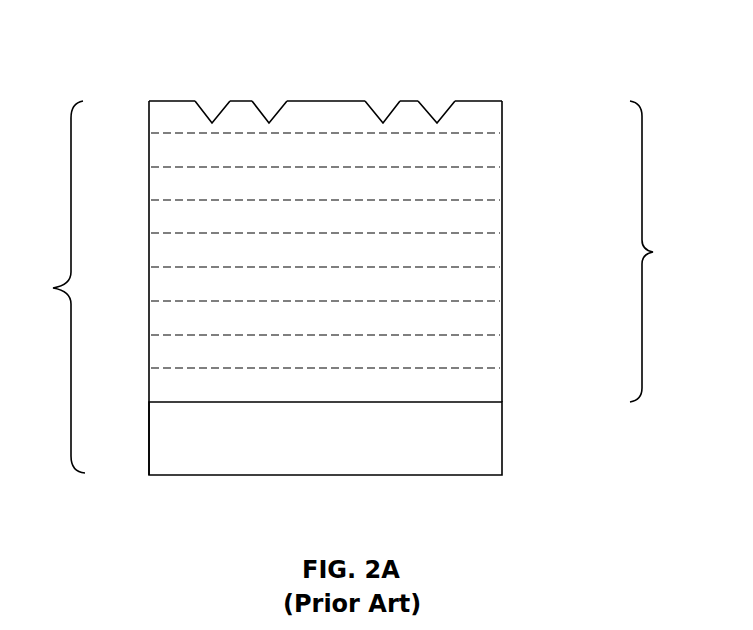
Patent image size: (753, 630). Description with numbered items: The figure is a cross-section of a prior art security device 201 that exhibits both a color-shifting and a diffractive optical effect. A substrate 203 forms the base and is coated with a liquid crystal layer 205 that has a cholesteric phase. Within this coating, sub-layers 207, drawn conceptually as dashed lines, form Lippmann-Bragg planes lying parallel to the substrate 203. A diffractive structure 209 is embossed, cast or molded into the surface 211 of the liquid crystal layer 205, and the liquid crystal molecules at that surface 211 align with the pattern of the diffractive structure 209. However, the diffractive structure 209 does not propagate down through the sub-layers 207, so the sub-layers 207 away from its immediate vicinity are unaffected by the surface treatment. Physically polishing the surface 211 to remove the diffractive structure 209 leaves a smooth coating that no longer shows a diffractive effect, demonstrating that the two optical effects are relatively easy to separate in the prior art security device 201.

The prior art security device 201 is at (77, 288).
The substrate 203 is at (200, 458).
The liquid crystal layer 205 is at (604, 251).
The sub-layers 207 is at (487, 215).
The diffractive structure 209 is at (269, 123).
The surface 211 is at (478, 100).